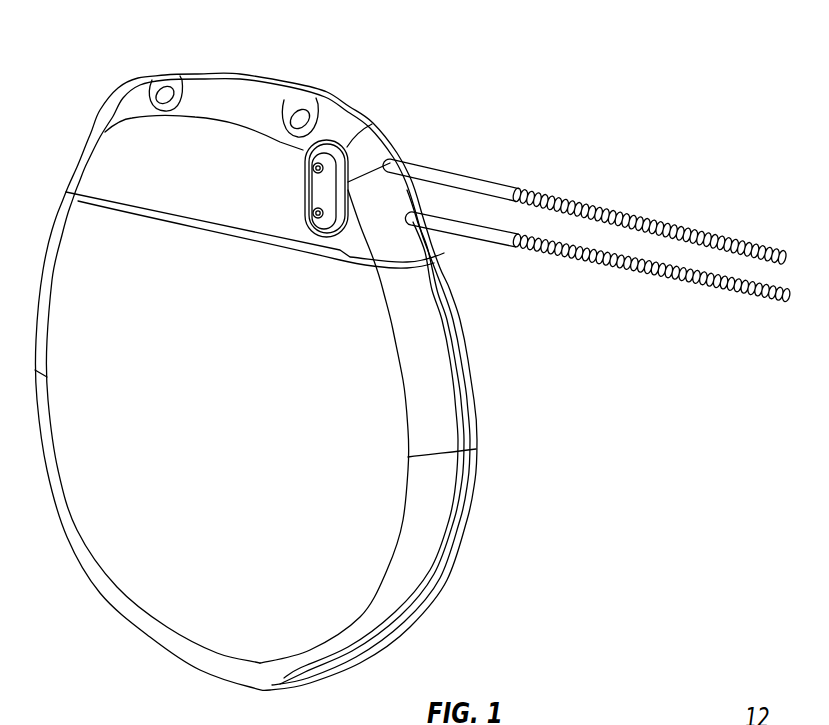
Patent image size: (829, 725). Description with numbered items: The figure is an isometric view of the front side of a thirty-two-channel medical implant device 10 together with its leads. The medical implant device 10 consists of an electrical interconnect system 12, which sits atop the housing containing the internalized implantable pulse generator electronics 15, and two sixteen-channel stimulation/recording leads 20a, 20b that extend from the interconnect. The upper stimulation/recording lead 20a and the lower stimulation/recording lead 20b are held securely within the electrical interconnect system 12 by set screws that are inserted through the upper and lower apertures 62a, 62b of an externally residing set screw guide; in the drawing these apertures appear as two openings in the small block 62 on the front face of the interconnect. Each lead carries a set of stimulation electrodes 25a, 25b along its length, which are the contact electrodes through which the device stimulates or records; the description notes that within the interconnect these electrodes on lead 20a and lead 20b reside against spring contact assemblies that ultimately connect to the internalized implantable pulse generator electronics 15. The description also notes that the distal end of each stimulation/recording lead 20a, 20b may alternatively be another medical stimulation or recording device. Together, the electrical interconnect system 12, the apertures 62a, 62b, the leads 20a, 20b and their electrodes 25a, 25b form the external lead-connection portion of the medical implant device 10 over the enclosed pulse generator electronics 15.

The medical implant device 10 is at (129, 48).
The electrical interconnect system 12 is at (255, 73).
The implantable pulse generator electronics 15 is at (240, 441).
The upper stimulation/recording lead 20a is at (584, 189).
The lower stimulation/recording lead 20b is at (597, 284).
The stimulation electrodes 25a is at (710, 237).
The stimulation electrodes 25b is at (700, 287).
The connector block 62 is at (312, 188).
The upper aperture 62a is at (313, 167).
The lower aperture 62b is at (313, 212).